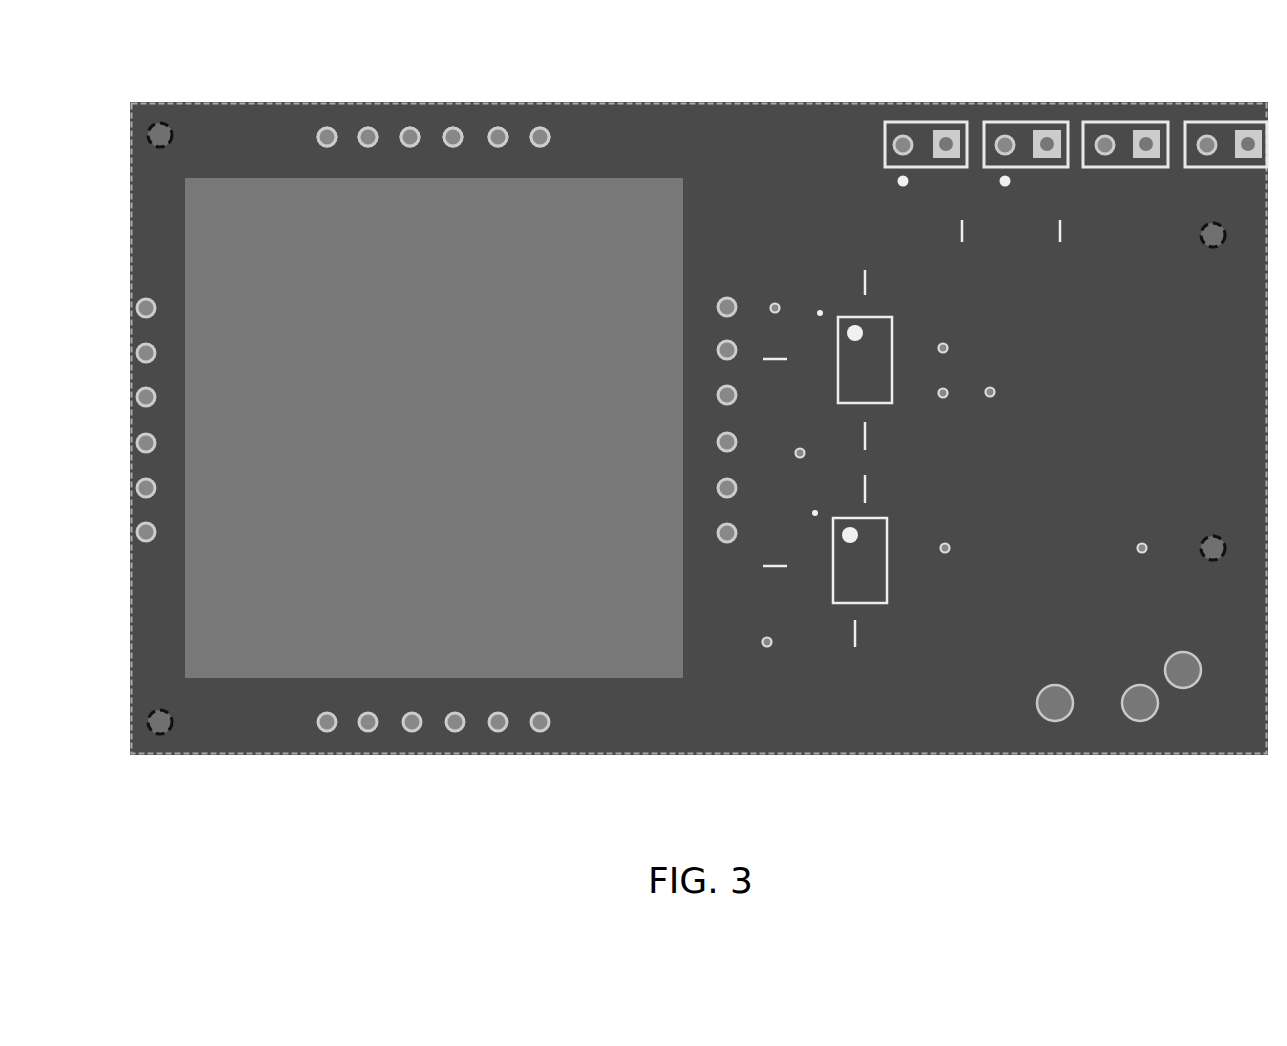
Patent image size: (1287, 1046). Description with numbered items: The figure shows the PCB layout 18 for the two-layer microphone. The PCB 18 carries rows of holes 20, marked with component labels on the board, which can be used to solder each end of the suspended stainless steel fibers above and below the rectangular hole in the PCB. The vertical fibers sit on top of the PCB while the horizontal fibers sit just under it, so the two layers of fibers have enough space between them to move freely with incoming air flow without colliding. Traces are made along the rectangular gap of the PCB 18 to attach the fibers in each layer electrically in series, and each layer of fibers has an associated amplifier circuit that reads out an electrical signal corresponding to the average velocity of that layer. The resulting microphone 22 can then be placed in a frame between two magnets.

The PCB layout 18 is at (930, 725).
The holes 20 is at (285, 88).
The microphone 22 is at (463, 558).